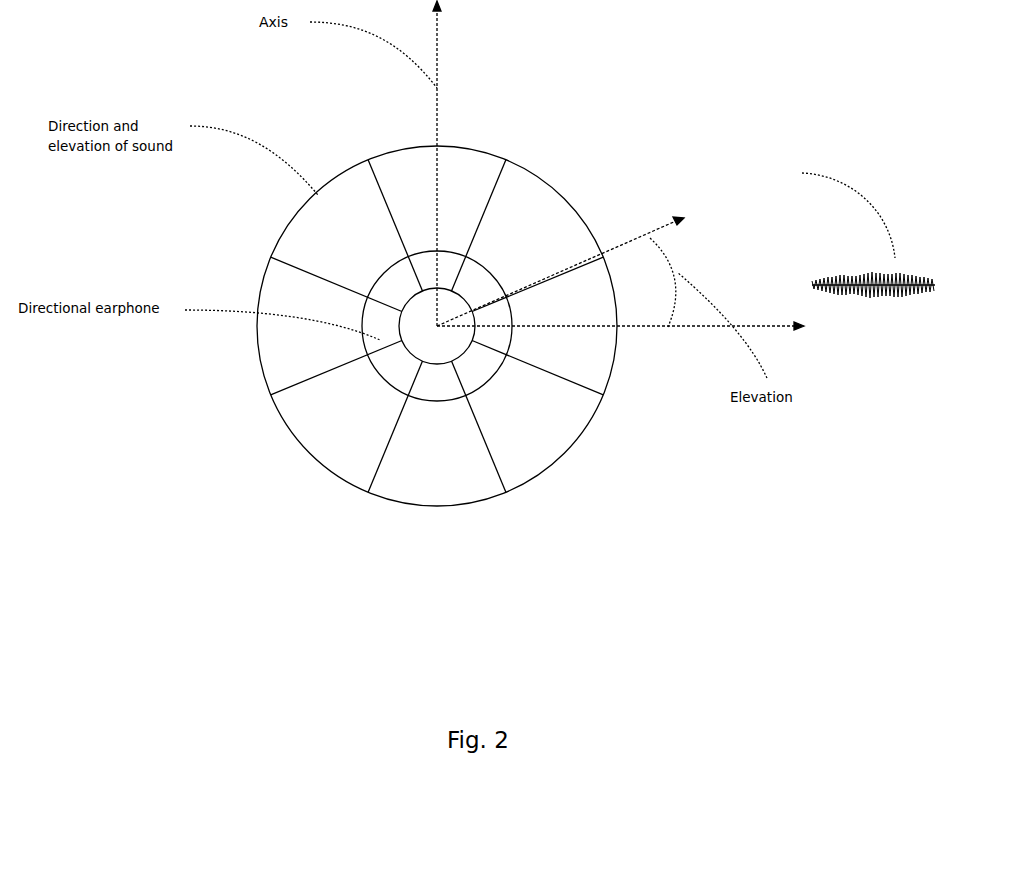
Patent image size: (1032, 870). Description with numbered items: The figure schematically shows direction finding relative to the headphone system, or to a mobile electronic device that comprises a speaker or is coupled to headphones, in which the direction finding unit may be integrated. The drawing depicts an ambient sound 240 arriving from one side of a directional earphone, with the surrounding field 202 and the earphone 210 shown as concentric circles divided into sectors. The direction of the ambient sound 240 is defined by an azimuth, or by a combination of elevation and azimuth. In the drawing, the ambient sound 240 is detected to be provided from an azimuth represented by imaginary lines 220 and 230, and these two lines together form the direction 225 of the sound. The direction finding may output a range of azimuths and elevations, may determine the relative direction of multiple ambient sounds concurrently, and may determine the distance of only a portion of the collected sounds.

The sound direction and elevation field 202 is at (290, 225).
The directional earphone 210 is at (262, 378).
The imaginary line 220 is at (623, 233).
The direction 225 is at (655, 256).
The imaginary line 230 is at (665, 330).
The ambient sound 240 is at (867, 293).